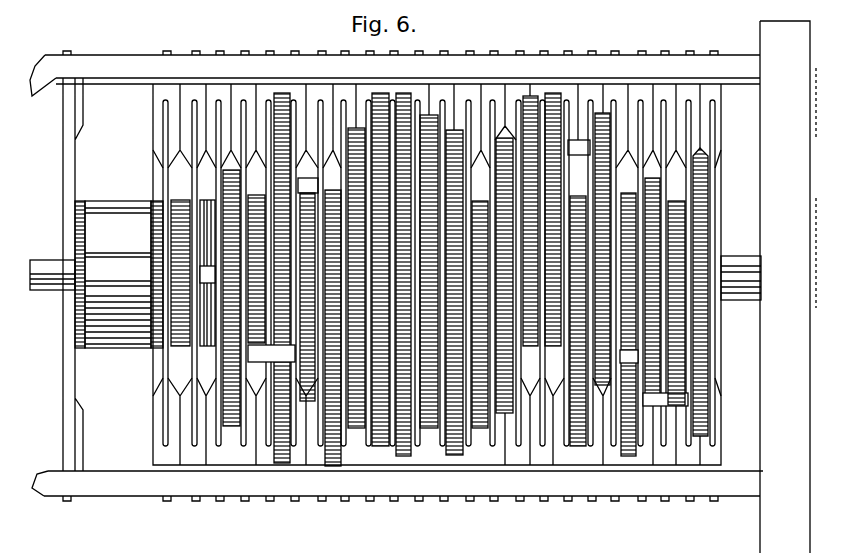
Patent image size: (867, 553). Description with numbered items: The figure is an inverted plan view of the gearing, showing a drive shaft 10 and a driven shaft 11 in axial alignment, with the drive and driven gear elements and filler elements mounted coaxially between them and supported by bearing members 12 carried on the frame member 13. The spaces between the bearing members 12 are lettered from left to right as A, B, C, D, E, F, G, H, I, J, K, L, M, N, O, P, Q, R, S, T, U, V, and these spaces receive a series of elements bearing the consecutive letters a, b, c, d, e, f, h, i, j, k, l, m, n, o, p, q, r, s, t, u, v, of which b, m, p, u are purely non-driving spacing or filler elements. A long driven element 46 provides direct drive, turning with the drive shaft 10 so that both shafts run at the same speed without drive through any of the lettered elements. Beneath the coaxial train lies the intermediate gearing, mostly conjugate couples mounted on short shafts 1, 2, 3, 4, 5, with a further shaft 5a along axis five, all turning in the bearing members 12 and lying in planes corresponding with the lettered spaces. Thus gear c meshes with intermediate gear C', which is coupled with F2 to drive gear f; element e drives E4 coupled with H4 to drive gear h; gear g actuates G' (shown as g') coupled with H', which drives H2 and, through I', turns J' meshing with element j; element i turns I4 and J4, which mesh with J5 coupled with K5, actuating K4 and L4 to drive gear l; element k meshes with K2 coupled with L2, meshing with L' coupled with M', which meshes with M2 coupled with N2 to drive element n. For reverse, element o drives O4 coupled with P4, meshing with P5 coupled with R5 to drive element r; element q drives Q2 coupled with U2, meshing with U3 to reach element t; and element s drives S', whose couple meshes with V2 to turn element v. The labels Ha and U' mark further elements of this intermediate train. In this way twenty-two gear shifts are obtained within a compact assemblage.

The driven element 46 is at (100, 194).
The drive shaft 10 is at (40, 284).
The driven shaft 11 is at (737, 290).
The bearing member 12 is at (160, 355).
The frame member 13 is at (92, 484).
The short shaft 1 is at (665, 400).
The short shaft 2 is at (443, 355).
The short shaft 3 is at (672, 255).
The short shaft 4 is at (396, 280).
The short shaft 5 is at (578, 157).
The short shaft 5a is at (405, 150).
The space A is at (160, 440).
The space B is at (188, 440).
The space C is at (226, 318).
The space D is at (250, 440).
The space E is at (280, 440).
The space F is at (307, 440).
The space G is at (340, 318).
The space H is at (371, 318).
The space I is at (394, 318).
The space J is at (414, 318).
The space K is at (434, 440).
The space L is at (468, 318).
The space M is at (495, 318).
The space N is at (510, 440).
The space O is at (534, 440).
The space P is at (558, 440).
The space Q is at (583, 440).
The space R is at (606, 440).
The space S is at (649, 318).
The space T is at (656, 440).
The space U is at (695, 318).
The space V is at (705, 440).
The gear element a is at (180, 265).
The filler element b is at (207, 265).
The gear c is at (220, 168).
The gear element d is at (256, 262).
The gear element e is at (256, 372).
The gear f is at (308, 177).
The intermediate gear element g' is at (298, 297).
The gear h is at (354, 271).
The gear element i is at (332, 193).
The element j is at (402, 283).
The gear element k is at (430, 263).
The gear element l is at (453, 267).
The filler element m is at (480, 306).
The element n is at (504, 263).
The element o is at (530, 362).
The filler element p is at (555, 362).
The element q is at (578, 310).
The element r is at (599, 407).
The element s is at (628, 312).
The element t is at (652, 285).
The filler element u is at (676, 290).
The element v is at (704, 200).
The intermediate gear element E4 is at (274, 86).
The intermediate gear element H4 is at (347, 120).
The intermediate gear element I4 is at (372, 86).
The intermediate gear element J5 is at (396, 86).
The intermediate gear element J4 is at (421, 107).
The intermediate gear element K5 is at (393, 160).
The intermediate gear element K4 is at (447, 122).
The gear Ha is at (440, 160).
The intermediate gear element L4 is at (470, 190).
The intermediate gear element O4 is at (522, 88).
The intermediate gear element P5 is at (545, 86).
The intermediate gear element P4 is at (548, 170).
The intermediate gear element R5 is at (595, 106).
The intermediate gear element U3 is at (678, 228).
The intermediate gear element V2 is at (706, 350).
The gear U' is at (728, 407).
The intermediate gear C' is at (241, 485).
The intermediate gear element F2 is at (298, 485).
The intermediate gear element G' is at (326, 485).
The intermediate gear element I' is at (376, 485).
The intermediate gear element J' is at (401, 485).
The intermediate gear element K2 is at (428, 485).
The intermediate gear element L2 is at (449, 485).
The intermediate gear element M2 is at (477, 485).
The intermediate gear element M' is at (497, 485).
The intermediate gear element N2 is at (519, 485).
The intermediate gear element Q2 is at (570, 485).
The intermediate gear element S' is at (625, 485).
The intermediate gear element U2 is at (679, 485).
The intermediate gear element H2 is at (345, 425).
The intermediate gear element H' is at (363, 490).
The intermediate gear element L' is at (457, 495).